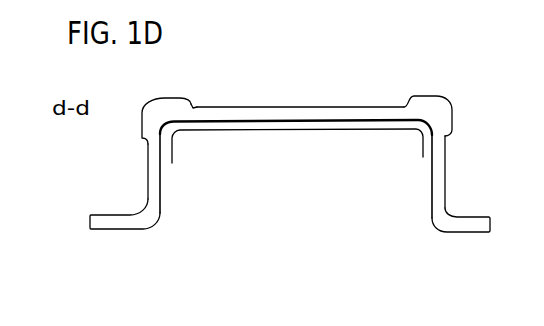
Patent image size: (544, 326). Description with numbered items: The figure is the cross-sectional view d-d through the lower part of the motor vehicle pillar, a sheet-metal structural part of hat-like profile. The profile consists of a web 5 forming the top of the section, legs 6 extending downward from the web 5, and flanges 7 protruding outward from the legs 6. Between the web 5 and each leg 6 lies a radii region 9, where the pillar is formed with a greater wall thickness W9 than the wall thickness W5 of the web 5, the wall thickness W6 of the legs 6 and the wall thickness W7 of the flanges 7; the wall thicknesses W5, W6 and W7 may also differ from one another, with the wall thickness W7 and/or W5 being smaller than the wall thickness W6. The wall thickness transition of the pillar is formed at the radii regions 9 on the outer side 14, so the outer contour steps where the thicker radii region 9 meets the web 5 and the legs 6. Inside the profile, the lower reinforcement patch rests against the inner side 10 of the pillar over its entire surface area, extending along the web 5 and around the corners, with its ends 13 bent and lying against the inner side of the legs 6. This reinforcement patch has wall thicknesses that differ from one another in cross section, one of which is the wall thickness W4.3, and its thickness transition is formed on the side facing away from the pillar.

The web 5 is at (287, 104).
The legs 6 is at (148, 177).
The flanges 7 is at (100, 230).
The radii region 9 is at (152, 125).
The inner side 10 is at (159, 205).
The ends 13 is at (180, 166).
The outer side 14 is at (193, 103).
The wall thickness W4.3 is at (352, 107).
The wall thickness W5 is at (228, 85).
The wall thickness W6 is at (128, 193).
The wall thickness W7 is at (118, 201).
The wall thickness W9 is at (188, 152).